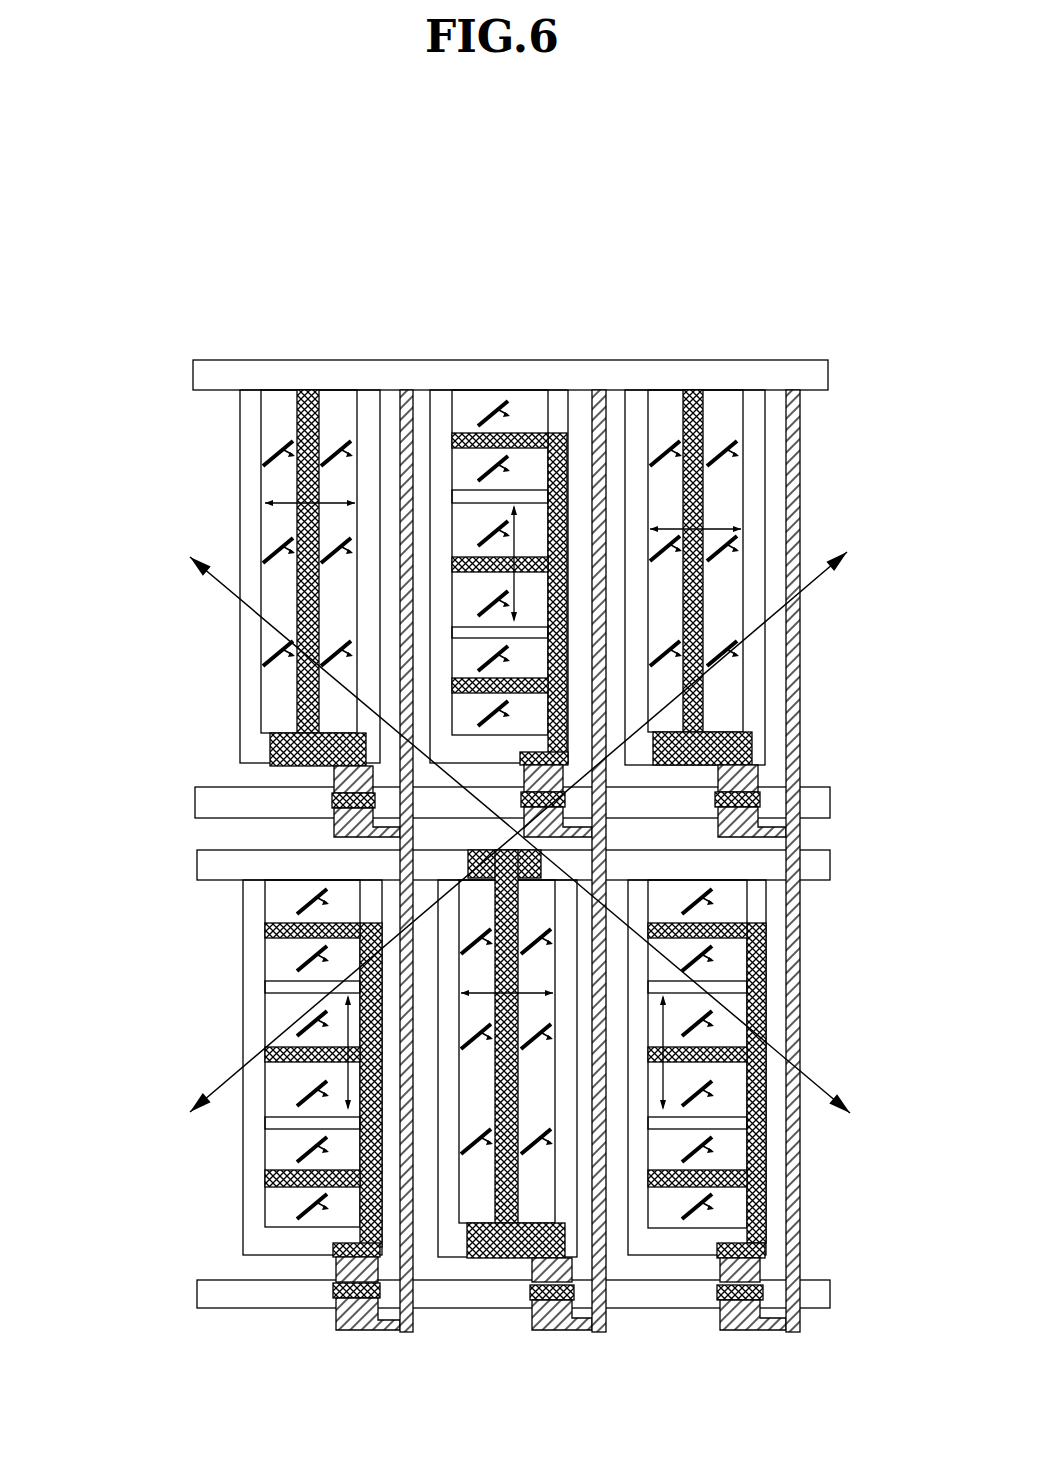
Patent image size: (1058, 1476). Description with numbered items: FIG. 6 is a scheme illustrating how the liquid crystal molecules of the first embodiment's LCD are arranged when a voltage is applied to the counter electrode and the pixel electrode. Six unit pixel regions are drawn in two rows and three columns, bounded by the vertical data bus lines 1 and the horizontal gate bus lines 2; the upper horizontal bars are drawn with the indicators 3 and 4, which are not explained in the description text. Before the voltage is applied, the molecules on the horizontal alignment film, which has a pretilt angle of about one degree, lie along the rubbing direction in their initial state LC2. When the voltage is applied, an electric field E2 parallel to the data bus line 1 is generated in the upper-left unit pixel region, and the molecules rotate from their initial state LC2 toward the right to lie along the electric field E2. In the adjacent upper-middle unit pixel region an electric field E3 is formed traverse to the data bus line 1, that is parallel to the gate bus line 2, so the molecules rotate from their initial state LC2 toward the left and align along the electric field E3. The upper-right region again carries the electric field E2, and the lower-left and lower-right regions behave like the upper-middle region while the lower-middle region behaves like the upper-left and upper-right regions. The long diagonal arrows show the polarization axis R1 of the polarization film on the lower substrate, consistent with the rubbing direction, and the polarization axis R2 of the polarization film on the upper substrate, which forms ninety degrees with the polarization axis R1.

The data bus line 1 is at (825, 797).
The gate bus line 2 is at (800, 676).
The common electrode line 3 is at (310, 353).
The pixel region 4 is at (444, 343).
The electric field parallel to the data bus line E2 is at (703, 537).
The electric field traverse to the data bus line E3 is at (550, 505).
The initial state of liquid crystal molecules LC2 is at (298, 440).
The polarization axis of lower polarization film R1 is at (501, 827).
The polarization axis of upper polarization film R2 is at (543, 824).